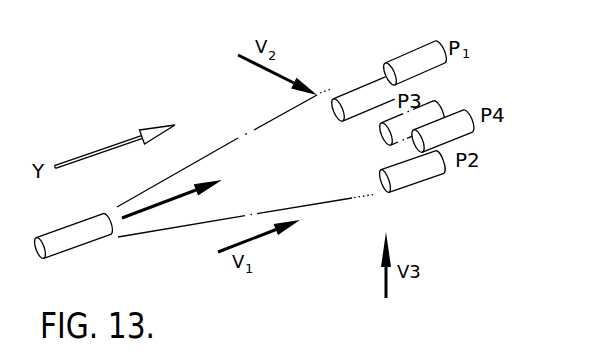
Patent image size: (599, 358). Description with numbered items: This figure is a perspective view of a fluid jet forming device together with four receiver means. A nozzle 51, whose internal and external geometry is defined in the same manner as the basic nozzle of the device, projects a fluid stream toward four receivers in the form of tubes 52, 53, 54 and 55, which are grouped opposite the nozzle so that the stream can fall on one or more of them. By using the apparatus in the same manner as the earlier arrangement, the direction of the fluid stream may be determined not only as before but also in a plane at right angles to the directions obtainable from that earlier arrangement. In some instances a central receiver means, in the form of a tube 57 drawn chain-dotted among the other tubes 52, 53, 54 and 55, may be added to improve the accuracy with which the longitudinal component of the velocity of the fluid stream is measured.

The nozzle 51 is at (95, 233).
The tube 52 is at (419, 50).
The tube 53 is at (417, 176).
The tube 54 is at (457, 109).
The tube 55 is at (362, 96).
The tube 57 is at (440, 103).